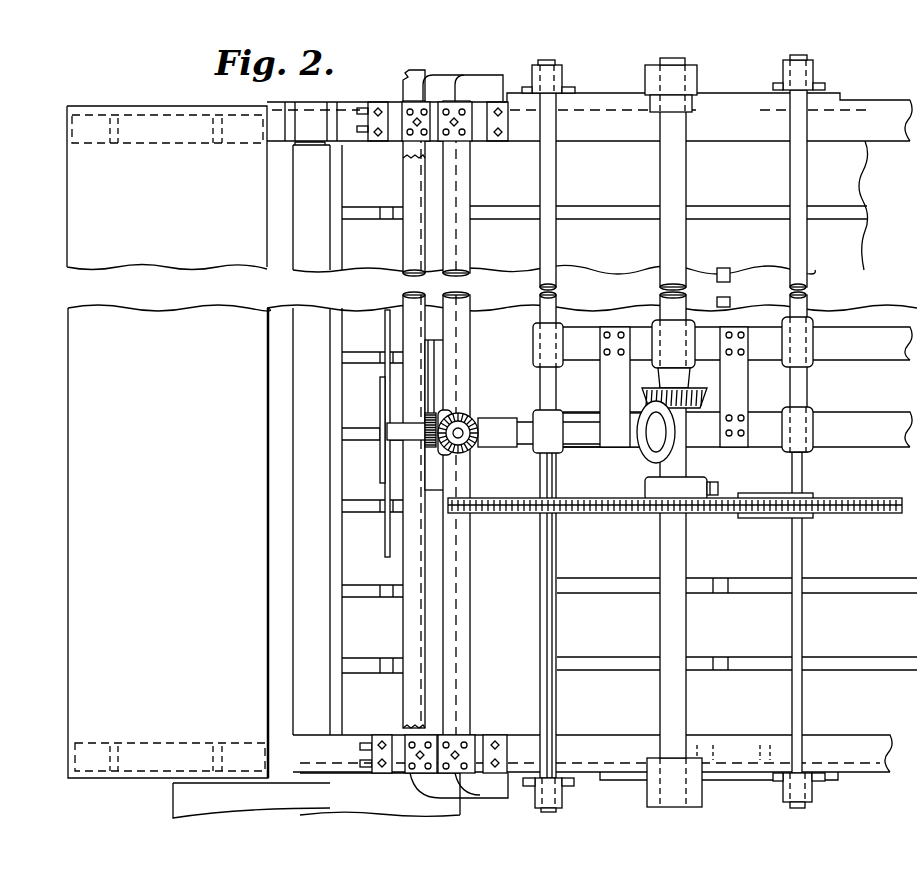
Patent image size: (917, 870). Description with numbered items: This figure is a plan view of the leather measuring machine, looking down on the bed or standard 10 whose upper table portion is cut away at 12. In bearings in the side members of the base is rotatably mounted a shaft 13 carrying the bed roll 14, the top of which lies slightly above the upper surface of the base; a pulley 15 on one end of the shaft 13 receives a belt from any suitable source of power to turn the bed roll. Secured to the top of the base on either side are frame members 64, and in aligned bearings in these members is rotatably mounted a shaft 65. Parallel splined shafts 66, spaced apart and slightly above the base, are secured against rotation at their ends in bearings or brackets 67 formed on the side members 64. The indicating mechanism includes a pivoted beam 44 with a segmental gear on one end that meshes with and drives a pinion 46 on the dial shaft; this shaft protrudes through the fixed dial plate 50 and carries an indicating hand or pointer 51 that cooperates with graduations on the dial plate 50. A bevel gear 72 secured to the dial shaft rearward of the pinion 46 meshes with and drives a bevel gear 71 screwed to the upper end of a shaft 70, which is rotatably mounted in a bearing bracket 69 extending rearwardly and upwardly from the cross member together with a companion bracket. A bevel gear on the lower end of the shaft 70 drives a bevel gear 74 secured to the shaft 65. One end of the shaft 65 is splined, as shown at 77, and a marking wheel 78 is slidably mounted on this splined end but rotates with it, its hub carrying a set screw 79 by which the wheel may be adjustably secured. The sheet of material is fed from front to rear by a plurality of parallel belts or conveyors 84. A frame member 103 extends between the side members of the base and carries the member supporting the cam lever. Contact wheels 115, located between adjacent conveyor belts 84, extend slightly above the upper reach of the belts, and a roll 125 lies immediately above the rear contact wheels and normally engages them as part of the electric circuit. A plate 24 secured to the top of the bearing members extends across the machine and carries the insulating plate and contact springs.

The bed or standard 10 is at (870, 112).
The cut away portion 12 is at (283, 668).
The shaft 13 is at (315, 783).
The bed roll 14 is at (312, 588).
The pulley 15 is at (390, 798).
The plate 24 is at (410, 150).
The pivoted beam 44 is at (435, 415).
The pinion 46 is at (430, 443).
The dial plate 50 is at (385, 540).
The indicating hand or pointer 51 is at (378, 476).
The frame members 64 is at (573, 450).
The shaft 65 is at (680, 248).
The splined shafts 66 is at (790, 625).
The bearings or brackets 67 is at (557, 73).
The bearing bracket 69 is at (747, 92).
The shaft 70 is at (527, 433).
The bevel gear 71 is at (462, 412).
The bevel gear 72 is at (452, 455).
The bevel gear 74 is at (700, 395).
The splined end 77 is at (677, 566).
The marking wheel 78 is at (645, 505).
The set screw 79 is at (718, 488).
The belts or conveyors 84 is at (575, 570).
The frame member 103 is at (725, 272).
The contact wheels 115 is at (410, 240).
The roll 125 is at (462, 645).